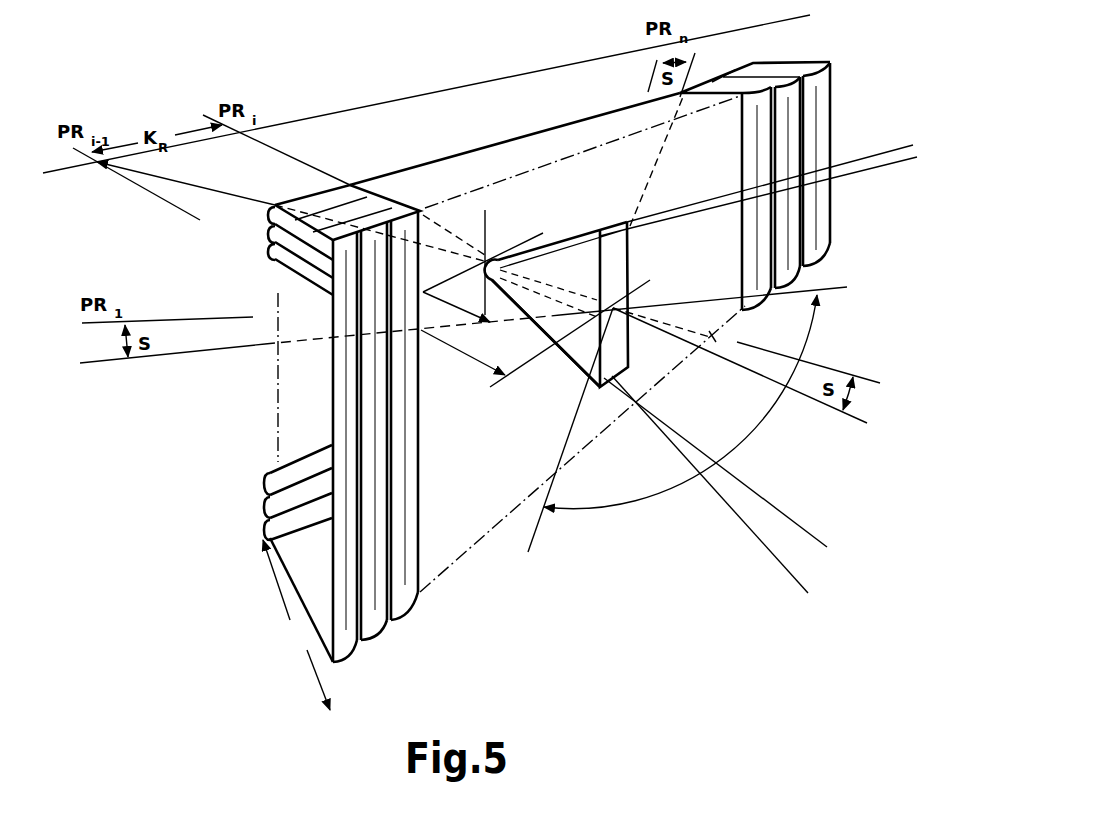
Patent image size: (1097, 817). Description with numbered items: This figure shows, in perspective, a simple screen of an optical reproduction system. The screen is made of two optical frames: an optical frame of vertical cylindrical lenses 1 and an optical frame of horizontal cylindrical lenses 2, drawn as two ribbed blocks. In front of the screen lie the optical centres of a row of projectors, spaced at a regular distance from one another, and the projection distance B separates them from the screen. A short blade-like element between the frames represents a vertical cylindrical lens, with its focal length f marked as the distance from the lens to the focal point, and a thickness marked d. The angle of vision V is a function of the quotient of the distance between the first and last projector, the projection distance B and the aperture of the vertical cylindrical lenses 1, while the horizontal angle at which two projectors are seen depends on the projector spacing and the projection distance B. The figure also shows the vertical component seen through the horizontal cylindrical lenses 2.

The optical frame of vertical cylindrical lenses 1 is at (401, 598).
The optical frame of horizontal cylindrical lenses 2 is at (268, 493).
The projection distance B is at (274, 262).
The blade thickness d is at (625, 222).
The focal length of the vertical cylinders f is at (546, 352).
The angle of vision V is at (680, 402).